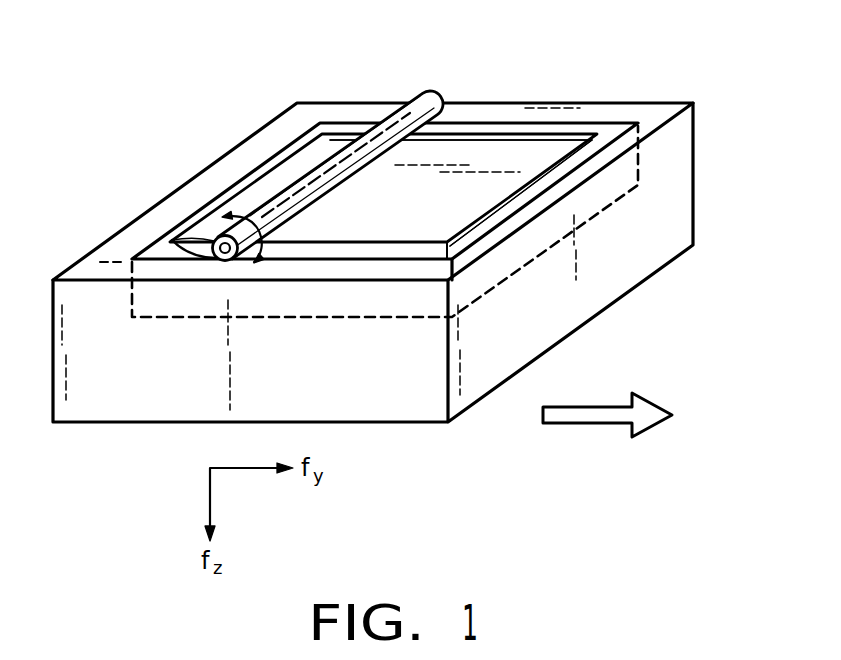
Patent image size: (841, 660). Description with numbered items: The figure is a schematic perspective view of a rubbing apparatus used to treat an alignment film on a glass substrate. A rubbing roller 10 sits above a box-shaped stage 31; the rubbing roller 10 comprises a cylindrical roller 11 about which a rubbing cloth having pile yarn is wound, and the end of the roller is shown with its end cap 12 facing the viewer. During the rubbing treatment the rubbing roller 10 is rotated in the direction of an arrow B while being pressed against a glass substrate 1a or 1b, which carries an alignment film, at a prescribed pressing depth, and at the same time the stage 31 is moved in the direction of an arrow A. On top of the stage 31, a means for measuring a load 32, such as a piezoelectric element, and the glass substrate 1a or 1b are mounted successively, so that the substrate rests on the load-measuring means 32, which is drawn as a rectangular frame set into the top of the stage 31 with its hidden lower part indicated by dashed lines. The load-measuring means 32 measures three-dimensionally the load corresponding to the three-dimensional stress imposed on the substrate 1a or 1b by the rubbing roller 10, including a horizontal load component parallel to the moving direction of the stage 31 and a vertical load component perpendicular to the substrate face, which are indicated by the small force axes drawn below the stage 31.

The glass substrate 1a is at (517, 153).
The glass substrate 1b is at (461, 193).
The rubbing roller 10 is at (430, 90).
The cylindrical roller 11 is at (217, 254).
The roller shaft end 12 is at (216, 238).
The stage 31 is at (394, 402).
The load-measuring means 32 is at (617, 127).
The arrow A is at (607, 426).
The arrow B is at (238, 213).